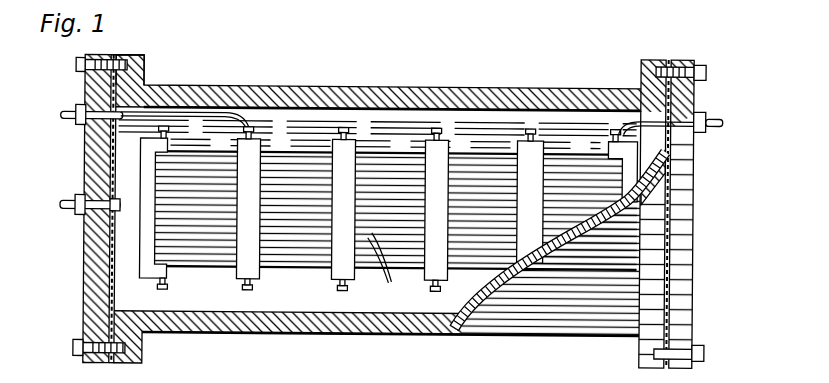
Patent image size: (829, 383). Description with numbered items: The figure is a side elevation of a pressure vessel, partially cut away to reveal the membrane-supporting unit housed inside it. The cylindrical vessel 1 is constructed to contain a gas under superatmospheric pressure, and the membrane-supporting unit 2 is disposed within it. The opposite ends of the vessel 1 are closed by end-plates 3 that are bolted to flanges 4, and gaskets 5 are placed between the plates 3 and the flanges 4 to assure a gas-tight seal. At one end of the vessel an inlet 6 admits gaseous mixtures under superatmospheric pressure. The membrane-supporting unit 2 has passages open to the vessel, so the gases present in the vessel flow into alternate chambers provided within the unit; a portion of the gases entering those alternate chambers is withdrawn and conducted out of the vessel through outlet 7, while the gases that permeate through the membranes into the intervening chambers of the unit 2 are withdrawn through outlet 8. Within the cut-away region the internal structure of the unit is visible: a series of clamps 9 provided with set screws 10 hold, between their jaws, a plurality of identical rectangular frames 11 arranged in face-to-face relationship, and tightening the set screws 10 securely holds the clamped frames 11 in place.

The cylindrical vessel 1 is at (390, 189).
The membrane-supporting unit 2 is at (300, 269).
The end-plates 3 is at (104, 57).
The flanges 4 is at (133, 57).
The gaskets 5 is at (111, 286).
The inlet 6 is at (64, 203).
The outlet 7 is at (712, 118).
The outlet 8 is at (67, 114).
The clamps 9 is at (357, 150).
The set screws 10 is at (535, 134).
The rectangular frames 11 is at (389, 269).